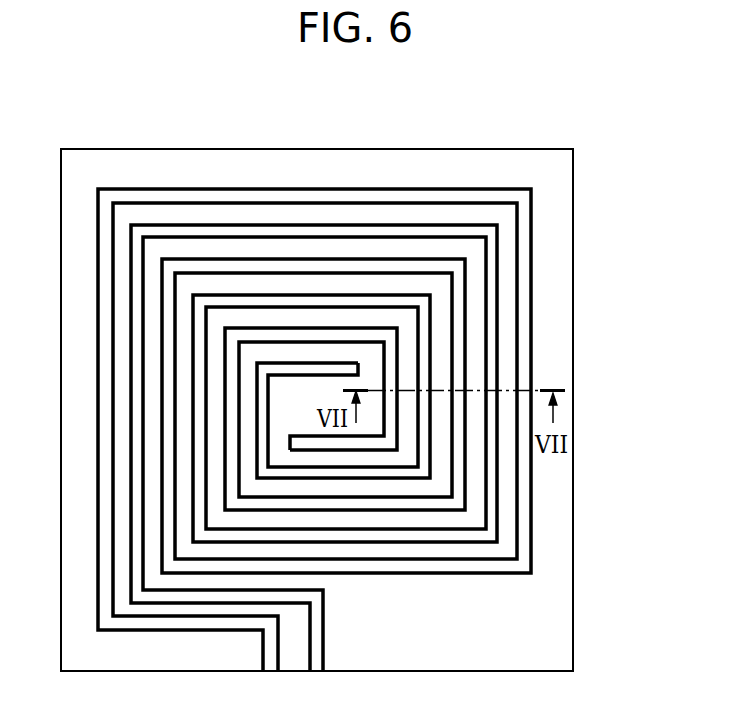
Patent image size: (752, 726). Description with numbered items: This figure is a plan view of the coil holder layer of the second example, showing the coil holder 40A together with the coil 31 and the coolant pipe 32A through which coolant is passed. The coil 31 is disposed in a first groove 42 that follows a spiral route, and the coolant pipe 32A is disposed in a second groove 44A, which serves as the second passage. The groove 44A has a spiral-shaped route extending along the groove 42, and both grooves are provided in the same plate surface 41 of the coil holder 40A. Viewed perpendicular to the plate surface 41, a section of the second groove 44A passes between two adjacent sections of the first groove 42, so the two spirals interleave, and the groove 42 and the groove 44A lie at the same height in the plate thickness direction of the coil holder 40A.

The coil holder 40A is at (508, 150).
The plate surface 41 is at (433, 172).
The groove 42 is at (531, 291).
The coil 31 is at (525, 252).
The groove 44A is at (327, 226).
The coolant pipe 32A is at (247, 230).